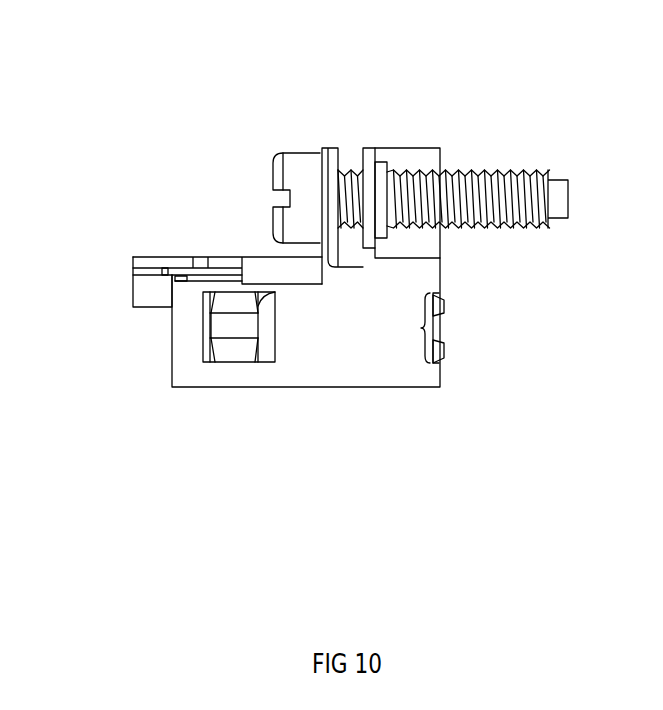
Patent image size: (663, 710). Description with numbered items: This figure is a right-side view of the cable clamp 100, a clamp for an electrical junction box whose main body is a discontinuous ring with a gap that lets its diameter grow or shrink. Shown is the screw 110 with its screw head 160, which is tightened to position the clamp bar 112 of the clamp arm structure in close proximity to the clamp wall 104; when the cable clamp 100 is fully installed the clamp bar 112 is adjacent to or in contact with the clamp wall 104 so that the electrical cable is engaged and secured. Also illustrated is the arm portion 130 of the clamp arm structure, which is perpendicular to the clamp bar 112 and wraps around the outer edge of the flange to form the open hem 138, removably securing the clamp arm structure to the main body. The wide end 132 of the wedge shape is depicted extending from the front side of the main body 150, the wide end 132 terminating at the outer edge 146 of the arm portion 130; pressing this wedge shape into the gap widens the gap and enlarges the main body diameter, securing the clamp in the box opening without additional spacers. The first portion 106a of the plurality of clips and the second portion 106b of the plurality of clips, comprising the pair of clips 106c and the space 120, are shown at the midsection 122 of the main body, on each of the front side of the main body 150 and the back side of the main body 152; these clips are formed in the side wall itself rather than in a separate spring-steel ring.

The cable clamp 100 is at (130, 131).
The clamp wall 104 is at (397, 160).
The screw 110 is at (532, 173).
The clamp bar 112 is at (335, 148).
The screw head 160 is at (300, 173).
The open hem 138 is at (257, 262).
The arm portion 130 is at (177, 255).
The outer edge of the arm portion 146 is at (133, 270).
The wide end 132 is at (140, 284).
The back side of the main body 152 is at (425, 248).
The space 120 is at (215, 334).
The midsection 122 is at (313, 320).
The front side of the main body 150 is at (237, 328).
The first portion of the plurality of clips 106a is at (227, 308).
The second portion of the plurality of clips 106b is at (223, 354).
The pair of clips 106c is at (395, 328).